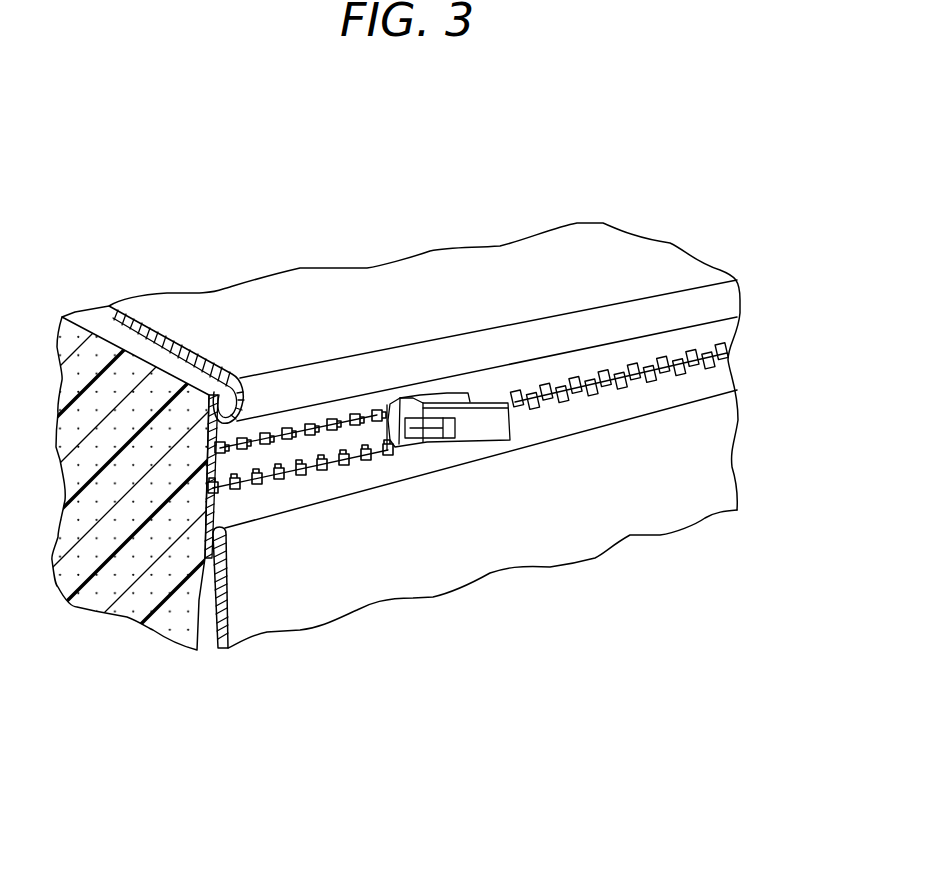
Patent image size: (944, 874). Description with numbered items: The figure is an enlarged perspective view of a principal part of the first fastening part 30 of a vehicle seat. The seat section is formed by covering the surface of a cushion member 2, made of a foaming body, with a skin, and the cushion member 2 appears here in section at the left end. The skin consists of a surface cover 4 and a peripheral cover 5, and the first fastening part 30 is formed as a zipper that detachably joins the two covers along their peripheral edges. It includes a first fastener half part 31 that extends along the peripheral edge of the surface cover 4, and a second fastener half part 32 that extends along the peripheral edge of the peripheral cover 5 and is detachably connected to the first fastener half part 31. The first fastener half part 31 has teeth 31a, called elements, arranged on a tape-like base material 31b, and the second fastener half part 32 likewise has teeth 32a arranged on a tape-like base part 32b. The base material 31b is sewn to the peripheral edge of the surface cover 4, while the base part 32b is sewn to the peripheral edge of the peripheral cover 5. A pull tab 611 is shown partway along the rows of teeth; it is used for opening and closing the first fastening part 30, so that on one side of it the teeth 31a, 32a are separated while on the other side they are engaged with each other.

The cushion member 2 is at (105, 588).
The surface cover 4 is at (357, 293).
The peripheral cover 5 is at (408, 573).
The first fastening part 30 is at (467, 352).
The first fastener half part 31 is at (510, 384).
The teeth 31a is at (315, 426).
The tape-like base material 31b is at (387, 405).
The second fastener half part 32 is at (270, 500).
The teeth 32a is at (368, 454).
The tape-like base part 32b is at (330, 480).
The pull tab 611 is at (500, 430).